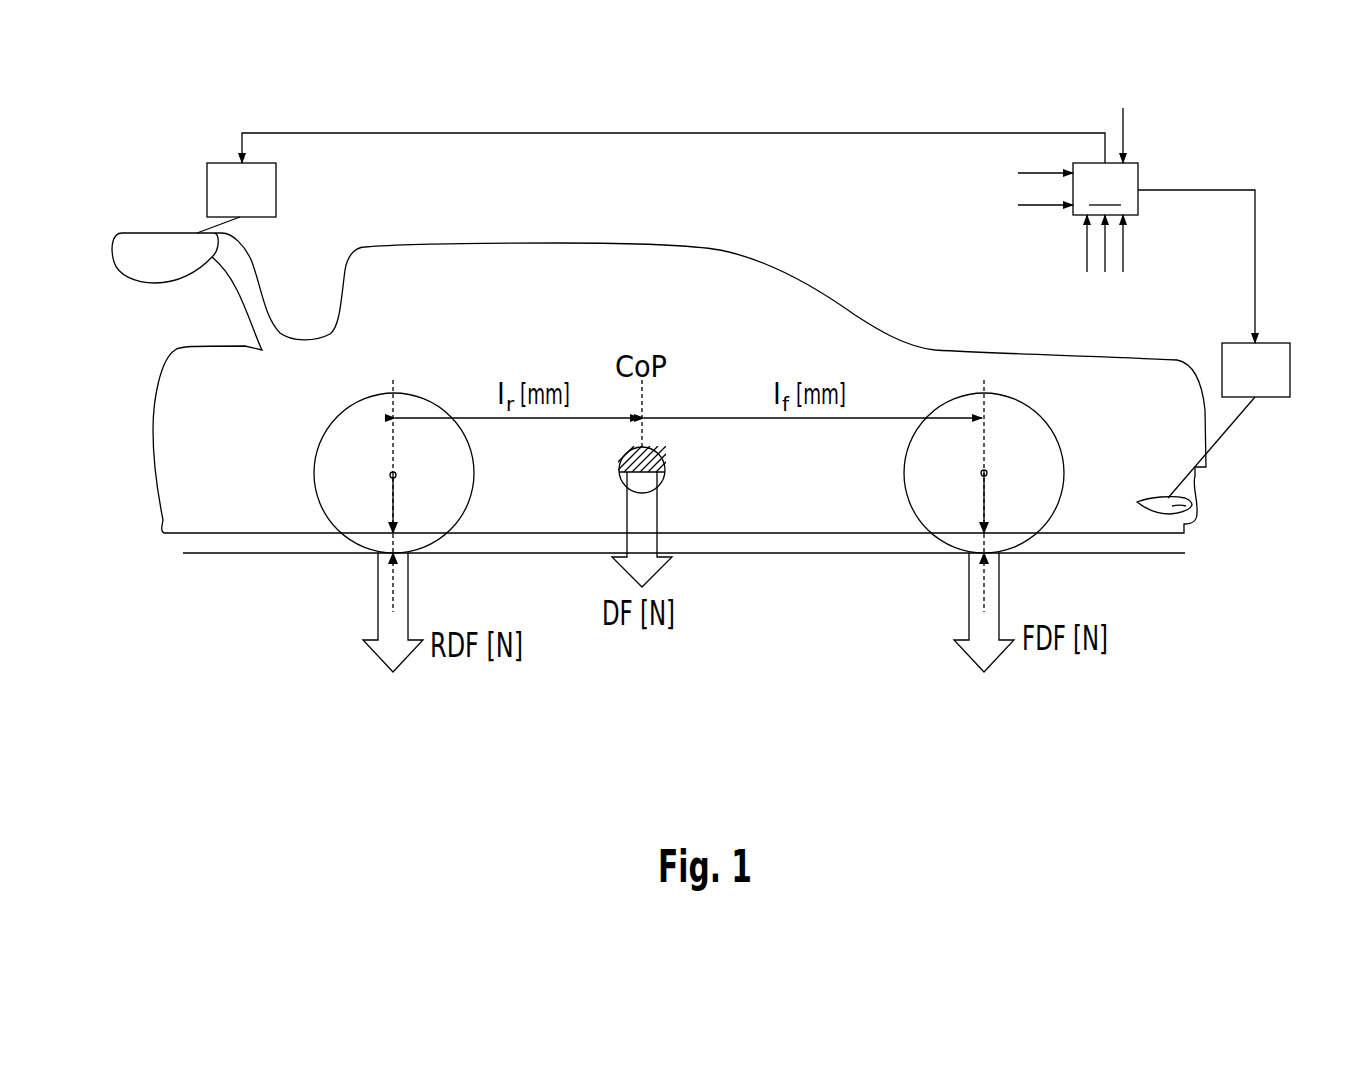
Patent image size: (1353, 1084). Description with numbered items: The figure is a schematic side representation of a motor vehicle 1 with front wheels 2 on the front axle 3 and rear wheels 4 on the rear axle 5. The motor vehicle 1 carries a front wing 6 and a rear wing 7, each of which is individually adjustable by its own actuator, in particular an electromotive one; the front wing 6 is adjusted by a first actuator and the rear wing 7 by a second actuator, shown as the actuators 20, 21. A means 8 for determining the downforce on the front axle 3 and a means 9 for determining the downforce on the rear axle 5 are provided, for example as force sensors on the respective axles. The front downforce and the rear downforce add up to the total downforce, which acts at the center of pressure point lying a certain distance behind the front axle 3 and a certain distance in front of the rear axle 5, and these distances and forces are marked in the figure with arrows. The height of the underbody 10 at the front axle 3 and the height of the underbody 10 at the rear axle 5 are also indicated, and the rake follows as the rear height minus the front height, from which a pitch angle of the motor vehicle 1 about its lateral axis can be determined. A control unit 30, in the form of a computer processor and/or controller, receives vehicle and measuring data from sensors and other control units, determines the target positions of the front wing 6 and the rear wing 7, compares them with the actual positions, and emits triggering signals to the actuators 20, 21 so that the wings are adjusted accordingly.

The motor vehicle 1 is at (828, 270).
The front wheels 2 is at (1010, 428).
The front axle 3 is at (984, 473).
The rear wheels 4 is at (366, 428).
The rear axle 5 is at (393, 475).
The front wing 6 is at (1193, 505).
The rear wing 7 is at (165, 254).
The means for determining the downforce on the front axle 8 is at (984, 473).
The means for determining the downforce on the rear axle 9 is at (393, 475).
The underbody 10 is at (178, 540).
The actuator 20 is at (277, 188).
The actuator 21 is at (1221, 370).
The control unit 30 is at (748, 225).